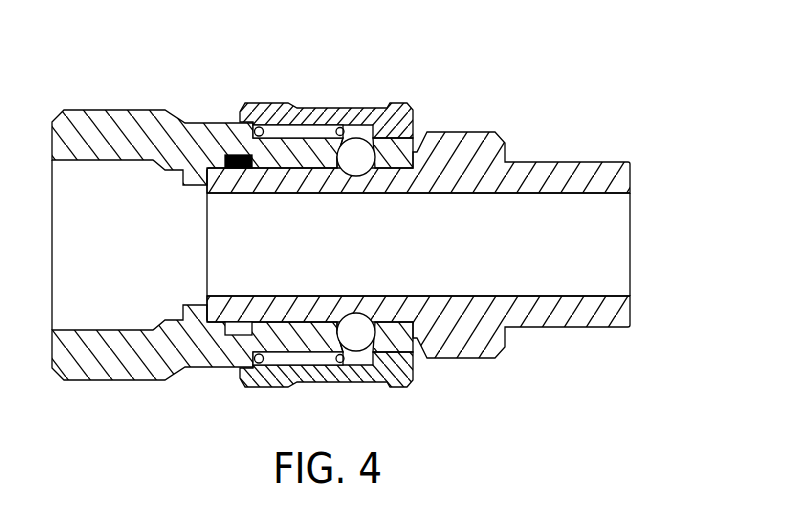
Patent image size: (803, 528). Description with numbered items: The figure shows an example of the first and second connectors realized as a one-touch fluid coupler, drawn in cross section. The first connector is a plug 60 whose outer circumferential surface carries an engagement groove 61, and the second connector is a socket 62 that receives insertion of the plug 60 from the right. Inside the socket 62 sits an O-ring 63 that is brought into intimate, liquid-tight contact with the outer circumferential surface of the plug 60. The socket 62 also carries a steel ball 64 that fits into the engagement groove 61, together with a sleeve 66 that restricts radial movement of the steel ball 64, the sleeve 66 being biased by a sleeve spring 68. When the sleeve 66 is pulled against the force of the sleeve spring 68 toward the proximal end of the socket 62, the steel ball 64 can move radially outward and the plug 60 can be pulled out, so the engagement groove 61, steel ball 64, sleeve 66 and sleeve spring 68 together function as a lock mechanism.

The plug 60 is at (537, 160).
The engagement groove 61 is at (377, 322).
The socket 62 is at (102, 108).
The O-ring 63 is at (233, 153).
The steel ball 64 is at (358, 147).
The sleeve 66 is at (278, 101).
The sleeve spring 68 is at (289, 148).